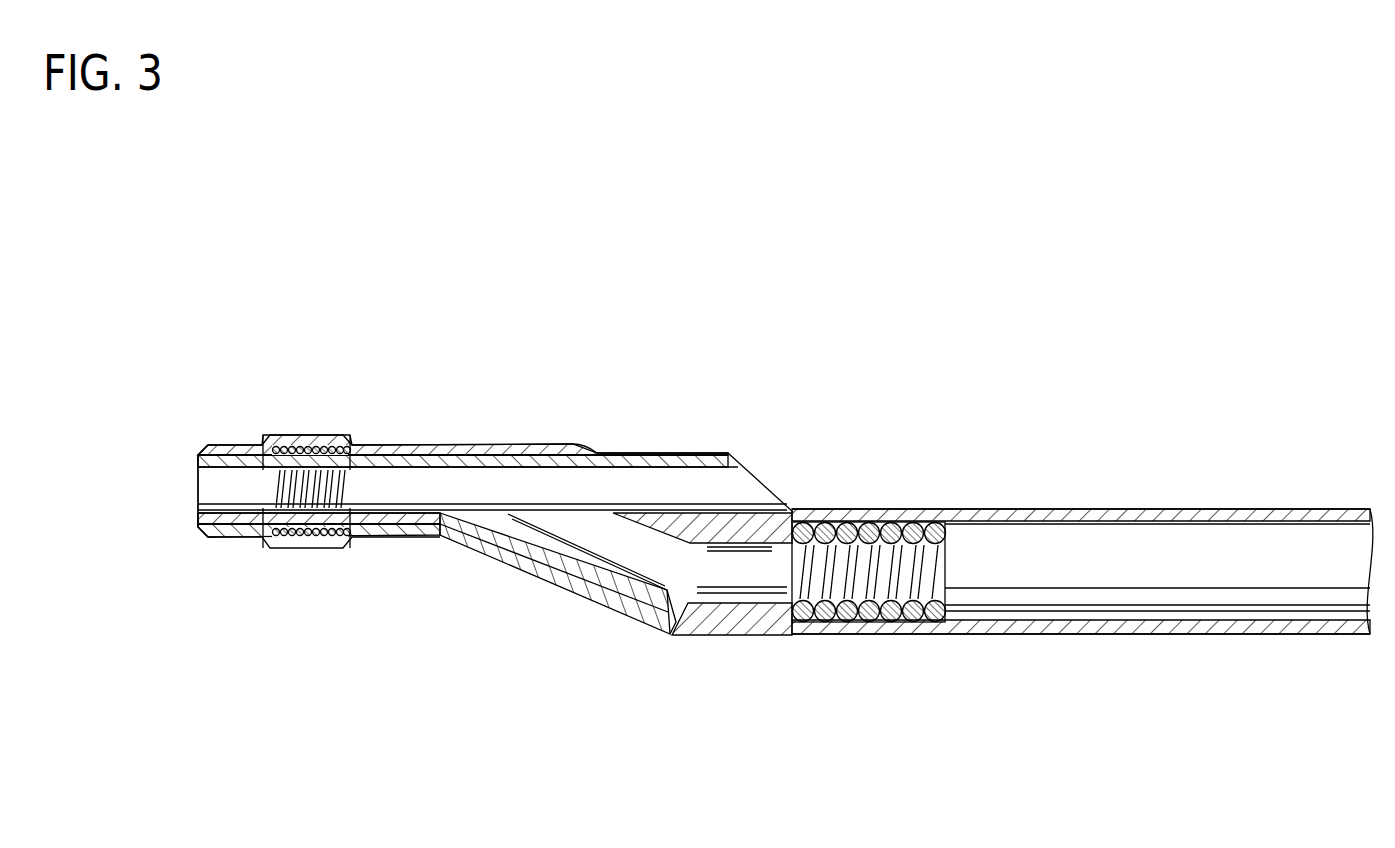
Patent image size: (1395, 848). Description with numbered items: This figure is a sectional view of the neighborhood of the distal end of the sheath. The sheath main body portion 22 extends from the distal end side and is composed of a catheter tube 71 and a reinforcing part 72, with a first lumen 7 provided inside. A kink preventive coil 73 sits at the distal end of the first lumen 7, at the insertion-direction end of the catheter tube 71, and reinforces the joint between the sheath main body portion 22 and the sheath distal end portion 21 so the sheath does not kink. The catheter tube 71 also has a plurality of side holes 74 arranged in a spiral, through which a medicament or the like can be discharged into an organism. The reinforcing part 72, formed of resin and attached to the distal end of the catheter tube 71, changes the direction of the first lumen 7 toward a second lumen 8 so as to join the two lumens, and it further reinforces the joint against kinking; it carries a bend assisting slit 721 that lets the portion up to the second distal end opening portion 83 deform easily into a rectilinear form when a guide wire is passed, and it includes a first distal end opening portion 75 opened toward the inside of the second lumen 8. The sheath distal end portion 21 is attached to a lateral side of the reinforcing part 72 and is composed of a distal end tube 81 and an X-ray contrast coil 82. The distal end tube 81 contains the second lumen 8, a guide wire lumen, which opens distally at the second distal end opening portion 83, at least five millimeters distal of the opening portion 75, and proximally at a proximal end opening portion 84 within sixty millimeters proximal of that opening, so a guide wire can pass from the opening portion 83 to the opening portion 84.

The sheath distal end portion 21 is at (465, 367).
The sheath main body portion 22 is at (1009, 720).
The first lumen 7 is at (1222, 598).
The catheter tube 71 is at (1128, 509).
The reinforcing part 72 is at (617, 598).
The bend assisting slit 721 is at (670, 633).
The kink preventive coil 73 is at (865, 636).
The side holes 74 is at (1204, 508).
The first distal end opening portion 75 is at (540, 525).
The second lumen 8 is at (618, 492).
The distal end tube 81 is at (702, 456).
The X-ray contrast coil 82 is at (302, 545).
The second distal end opening portion 83 is at (196, 492).
The proximal end opening portion 84 is at (767, 492).